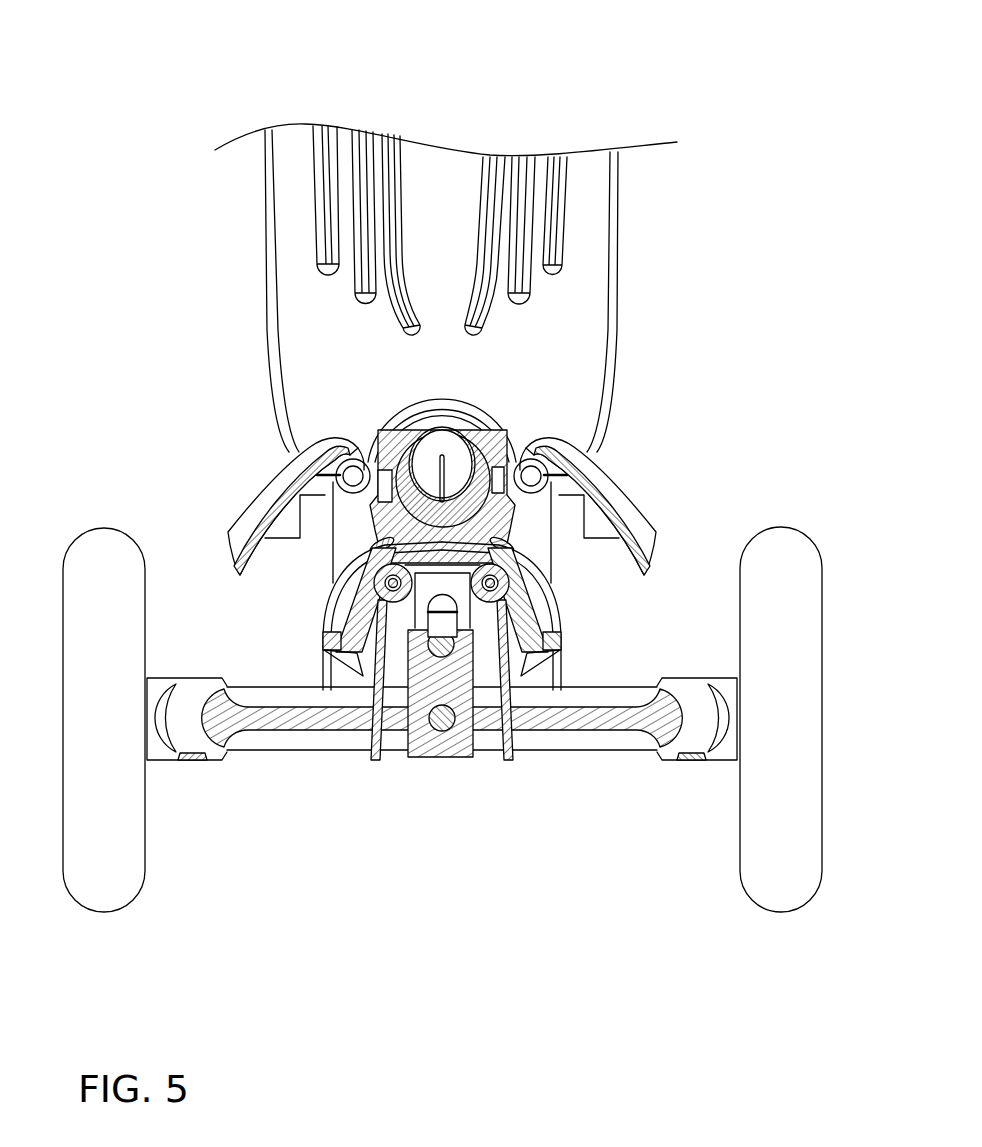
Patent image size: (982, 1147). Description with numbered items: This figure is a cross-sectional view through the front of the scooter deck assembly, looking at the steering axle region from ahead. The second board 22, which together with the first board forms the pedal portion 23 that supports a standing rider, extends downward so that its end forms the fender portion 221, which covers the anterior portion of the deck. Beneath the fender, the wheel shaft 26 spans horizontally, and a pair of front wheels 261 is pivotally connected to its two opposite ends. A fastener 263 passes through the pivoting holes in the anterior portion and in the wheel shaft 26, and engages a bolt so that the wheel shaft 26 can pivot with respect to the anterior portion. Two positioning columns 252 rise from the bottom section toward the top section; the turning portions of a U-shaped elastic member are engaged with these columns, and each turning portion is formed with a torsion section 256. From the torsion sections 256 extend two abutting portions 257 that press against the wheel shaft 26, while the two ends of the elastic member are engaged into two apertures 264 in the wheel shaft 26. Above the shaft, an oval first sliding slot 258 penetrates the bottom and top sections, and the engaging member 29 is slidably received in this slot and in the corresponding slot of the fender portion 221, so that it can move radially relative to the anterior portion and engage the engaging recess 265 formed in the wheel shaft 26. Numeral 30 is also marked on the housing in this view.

The second board 22 is at (593, 360).
The pedal portion 23 is at (424, 116).
The wheel shaft 26 is at (573, 718).
The engaging member 29 is at (455, 640).
The pivot housing 30 is at (376, 433).
The fender portion 221 is at (615, 482).
The positioning columns 252 is at (511, 583).
The torsion section 256 is at (376, 583).
The abutting portions 257 is at (365, 723).
The first sliding slot 258 is at (428, 610).
The front wheels 261 is at (128, 838).
The fastener 263 is at (442, 732).
The apertures 264 is at (390, 762).
The engaging recess 265 is at (372, 640).